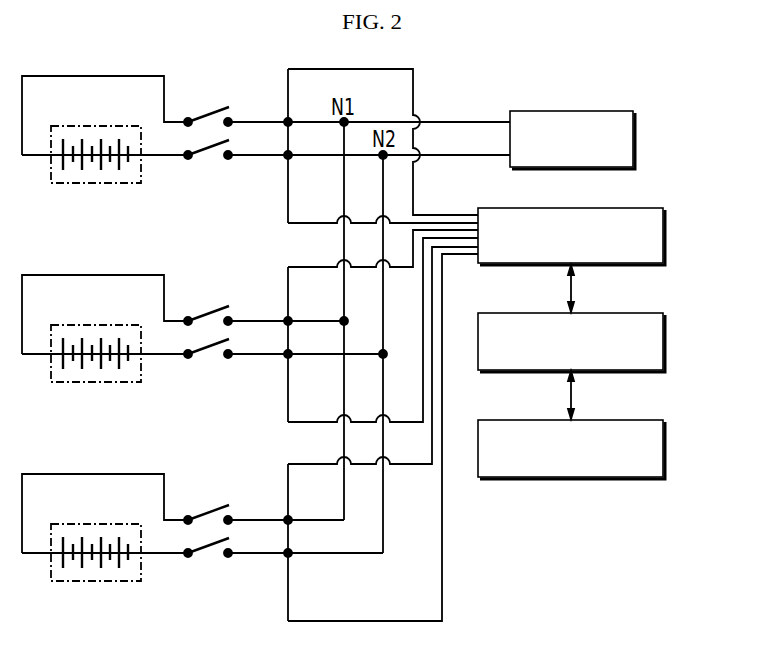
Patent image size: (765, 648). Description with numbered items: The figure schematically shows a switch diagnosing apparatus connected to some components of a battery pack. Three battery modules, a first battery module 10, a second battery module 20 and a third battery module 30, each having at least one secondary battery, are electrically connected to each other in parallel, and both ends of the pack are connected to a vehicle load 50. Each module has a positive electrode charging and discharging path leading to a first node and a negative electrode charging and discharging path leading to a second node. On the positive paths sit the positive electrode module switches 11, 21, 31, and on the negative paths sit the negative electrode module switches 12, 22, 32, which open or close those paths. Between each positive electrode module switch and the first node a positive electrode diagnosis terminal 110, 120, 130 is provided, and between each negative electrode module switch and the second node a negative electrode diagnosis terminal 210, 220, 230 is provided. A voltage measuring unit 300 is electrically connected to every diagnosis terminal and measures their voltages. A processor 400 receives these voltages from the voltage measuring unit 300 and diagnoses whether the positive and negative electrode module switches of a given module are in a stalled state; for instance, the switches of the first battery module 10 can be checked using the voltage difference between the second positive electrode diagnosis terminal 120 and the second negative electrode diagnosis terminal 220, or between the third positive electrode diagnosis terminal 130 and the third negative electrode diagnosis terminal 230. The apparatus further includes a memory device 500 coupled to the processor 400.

The first battery module 10 is at (104, 126).
The first positive electrode module switch 11 is at (213, 109).
The first negative electrode module switch 12 is at (211, 150).
The second battery module 20 is at (96, 333).
The second positive electrode module switch 21 is at (208, 298).
The second negative electrode module switch 22 is at (208, 368).
The third battery module 30 is at (96, 532).
The third positive electrode module switch 31 is at (208, 497).
The third negative electrode module switch 32 is at (208, 567).
The first positive electrode diagnosis terminal 110 is at (287, 121).
The first negative electrode diagnosis terminal 210 is at (287, 161).
The second positive electrode diagnosis terminal 120 is at (272, 305).
The second negative electrode diagnosis terminal 220 is at (272, 373).
The third positive electrode diagnosis terminal 130 is at (272, 504).
The third negative electrode diagnosis terminal 230 is at (272, 572).
The vehicle load 50 is at (607, 111).
The voltage measuring unit 300 is at (665, 238).
The processor 400 is at (665, 345).
The memory device 500 is at (665, 450).